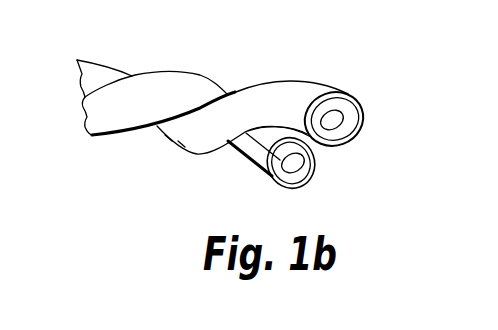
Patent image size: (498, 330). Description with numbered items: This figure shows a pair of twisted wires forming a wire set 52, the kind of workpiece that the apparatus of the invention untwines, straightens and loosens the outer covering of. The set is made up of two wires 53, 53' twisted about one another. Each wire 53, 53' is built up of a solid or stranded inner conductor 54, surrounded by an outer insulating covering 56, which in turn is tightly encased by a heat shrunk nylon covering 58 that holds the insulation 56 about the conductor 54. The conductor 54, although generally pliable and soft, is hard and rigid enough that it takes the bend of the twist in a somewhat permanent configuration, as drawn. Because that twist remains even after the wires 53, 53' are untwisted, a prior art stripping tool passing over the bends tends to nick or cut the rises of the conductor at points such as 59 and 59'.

The wire set 52 is at (333, 86).
The wire 53 is at (272, 171).
The wire 53' is at (272, 67).
The inner conductor 54 is at (337, 118).
The outer insulating covering 56 is at (350, 125).
The heat shrunk nylon covering 58 is at (339, 144).
The point 59 is at (152, 85).
The point 59' is at (184, 167).